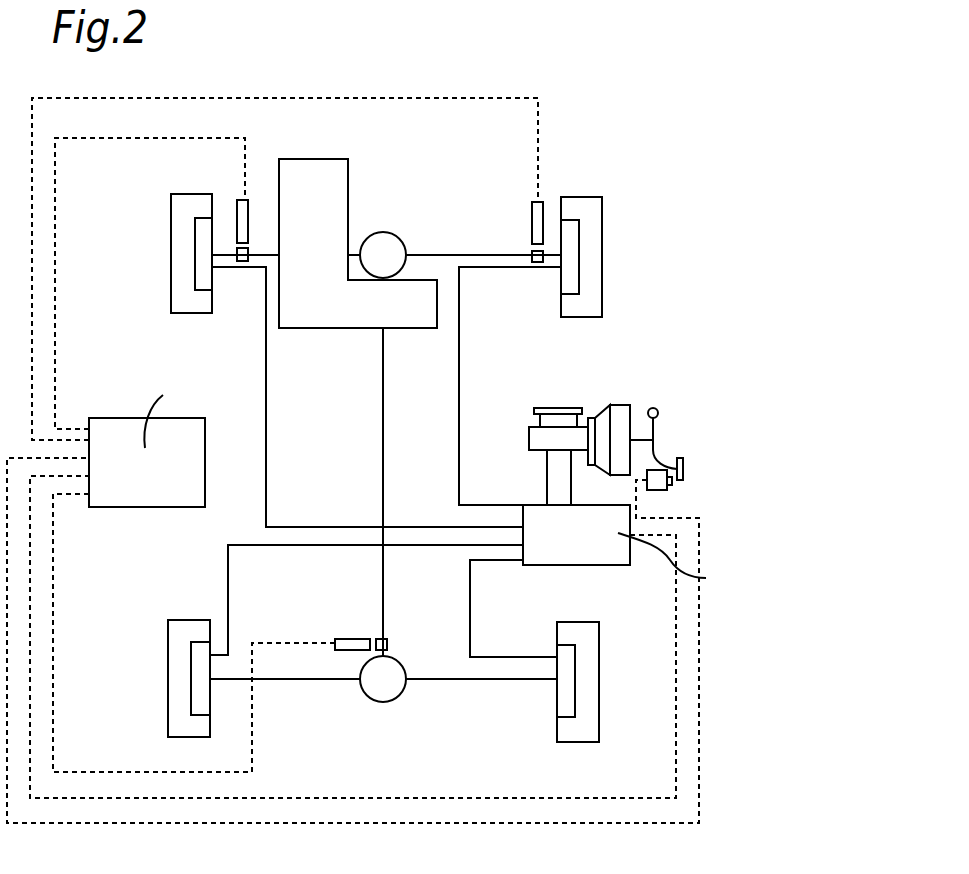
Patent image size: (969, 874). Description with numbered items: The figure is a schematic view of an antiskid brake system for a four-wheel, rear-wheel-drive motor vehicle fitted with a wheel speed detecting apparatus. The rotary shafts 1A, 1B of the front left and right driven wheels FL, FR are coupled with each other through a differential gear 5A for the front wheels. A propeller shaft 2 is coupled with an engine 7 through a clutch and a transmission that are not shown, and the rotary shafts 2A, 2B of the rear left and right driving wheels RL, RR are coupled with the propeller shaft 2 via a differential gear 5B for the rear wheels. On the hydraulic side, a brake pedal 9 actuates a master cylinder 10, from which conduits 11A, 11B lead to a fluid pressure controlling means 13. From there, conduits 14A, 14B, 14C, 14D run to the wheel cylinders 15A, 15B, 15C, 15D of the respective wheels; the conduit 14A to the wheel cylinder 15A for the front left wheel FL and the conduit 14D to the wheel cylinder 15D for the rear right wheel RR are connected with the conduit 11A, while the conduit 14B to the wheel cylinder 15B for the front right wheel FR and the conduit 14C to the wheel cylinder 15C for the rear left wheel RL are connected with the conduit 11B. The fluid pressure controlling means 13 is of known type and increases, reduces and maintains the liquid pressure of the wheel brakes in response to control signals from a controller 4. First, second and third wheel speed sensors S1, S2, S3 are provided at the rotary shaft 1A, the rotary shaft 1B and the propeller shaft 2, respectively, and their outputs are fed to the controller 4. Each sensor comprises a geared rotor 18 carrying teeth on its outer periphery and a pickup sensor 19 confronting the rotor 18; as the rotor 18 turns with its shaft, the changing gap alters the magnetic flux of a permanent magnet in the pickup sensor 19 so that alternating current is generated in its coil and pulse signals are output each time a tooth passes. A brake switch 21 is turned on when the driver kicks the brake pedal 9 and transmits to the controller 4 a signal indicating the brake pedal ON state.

The rotary shaft 1A is at (272, 252).
The rotary shaft 1B is at (463, 255).
The propeller shaft 2 is at (384, 380).
The rotary shaft 2A is at (308, 679).
The rotary shaft 2B is at (480, 679).
The controller 4 is at (125, 507).
The differential gear for front wheels 5A is at (383, 232).
The differential gear for rear wheels 5B is at (378, 702).
The engine 7 is at (317, 159).
The brake pedal 9 is at (686, 467).
The master cylinder 10 is at (529, 438).
The conduit 11A is at (547, 463).
The conduit 11B is at (571, 483).
The fluid pressure controlling means 13 is at (603, 565).
The conduit 14A is at (266, 360).
The conduit 14B is at (493, 268).
The conduit 14C is at (228, 592).
The conduit 14D is at (470, 607).
The wheel cylinder 15A is at (213, 227).
The wheel cylinder 15B is at (560, 237).
The wheel cylinder 15C is at (210, 700).
The wheel cylinder 15D is at (557, 690).
The geared rotor 18 is at (241, 262).
The pickup sensor 19 is at (237, 195).
The brake switch 21 is at (653, 490).
The first wheel speed sensor S1 is at (250, 178).
The second wheel speed sensor S2 is at (532, 195).
The third wheel speed sensor S3 is at (327, 625).
The front left driven wheel FL is at (171, 245).
The front right driven wheel FR is at (602, 252).
The rear left driving wheel RL is at (168, 672).
The rear right driving wheel RR is at (599, 672).